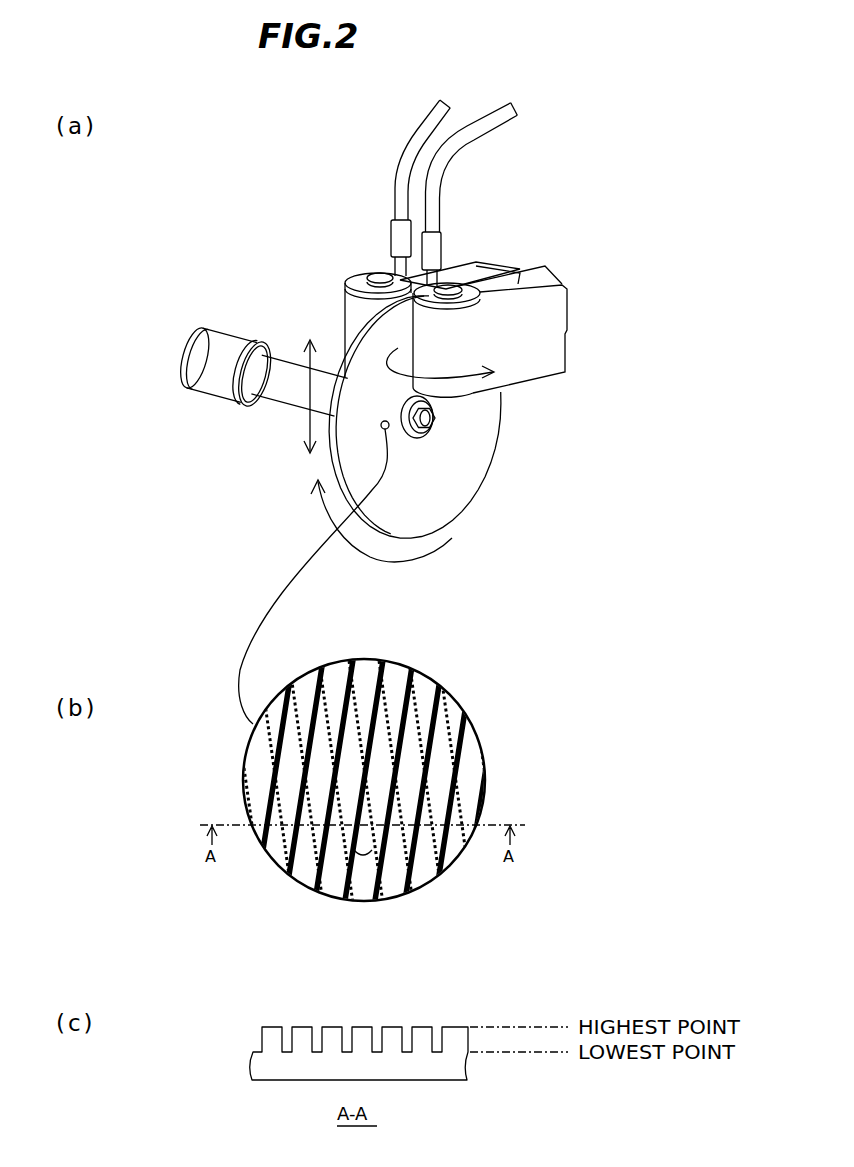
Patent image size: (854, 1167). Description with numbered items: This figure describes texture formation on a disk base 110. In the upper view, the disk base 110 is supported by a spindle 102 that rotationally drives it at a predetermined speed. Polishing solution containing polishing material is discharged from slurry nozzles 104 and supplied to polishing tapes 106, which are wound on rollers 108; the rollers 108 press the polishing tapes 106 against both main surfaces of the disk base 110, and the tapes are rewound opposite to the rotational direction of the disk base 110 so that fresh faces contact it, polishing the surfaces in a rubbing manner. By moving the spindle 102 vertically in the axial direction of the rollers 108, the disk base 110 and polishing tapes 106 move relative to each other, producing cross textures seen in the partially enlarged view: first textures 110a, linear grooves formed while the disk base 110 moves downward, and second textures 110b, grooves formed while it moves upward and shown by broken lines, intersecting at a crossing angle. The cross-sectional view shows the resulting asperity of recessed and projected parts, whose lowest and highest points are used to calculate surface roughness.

The spindle 102 is at (287, 398).
The slurry nozzles 104 is at (403, 158).
The polishing tapes 106 is at (547, 373).
The rollers 108 is at (357, 279).
The disk base 110 is at (457, 483).
The first textures 110a is at (263, 856).
The second textures 110b is at (314, 848).